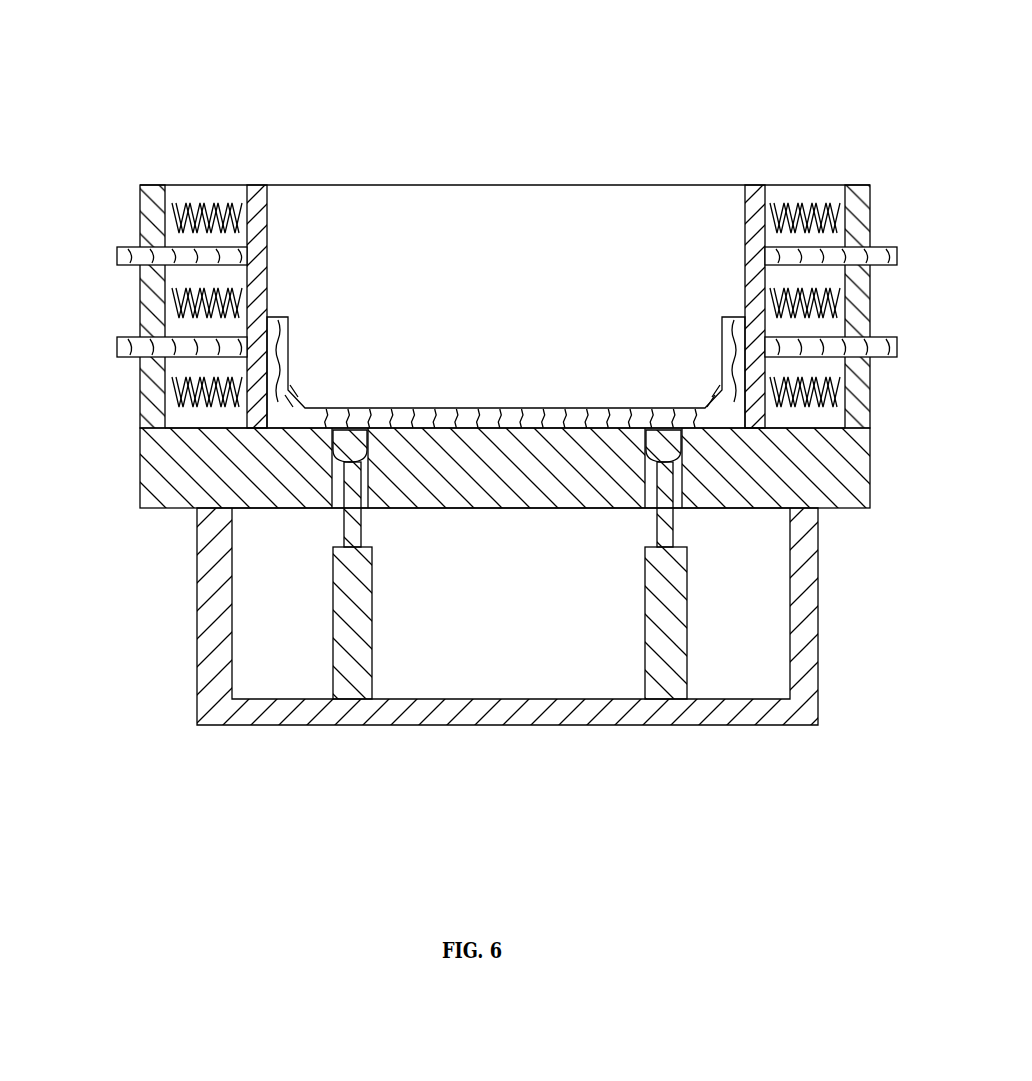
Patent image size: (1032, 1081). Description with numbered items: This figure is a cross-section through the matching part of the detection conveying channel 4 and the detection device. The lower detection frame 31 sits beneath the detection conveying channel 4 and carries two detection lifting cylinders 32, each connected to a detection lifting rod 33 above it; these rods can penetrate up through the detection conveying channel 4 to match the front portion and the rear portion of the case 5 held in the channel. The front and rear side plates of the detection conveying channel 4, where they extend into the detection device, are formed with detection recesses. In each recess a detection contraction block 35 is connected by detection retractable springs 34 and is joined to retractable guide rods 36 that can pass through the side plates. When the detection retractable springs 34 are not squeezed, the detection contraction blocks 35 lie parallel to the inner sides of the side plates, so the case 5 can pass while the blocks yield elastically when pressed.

The detection conveying channel 4 is at (168, 490).
The case 5 is at (575, 408).
The lower detection frame 31 is at (600, 702).
The detection lifting cylinder 32 is at (350, 667).
The detection lifting rod 33 is at (685, 470).
The detection retractable spring 34 is at (797, 215).
The detection contraction block 35 is at (247, 280).
The retractable guide rod 36 is at (138, 358).